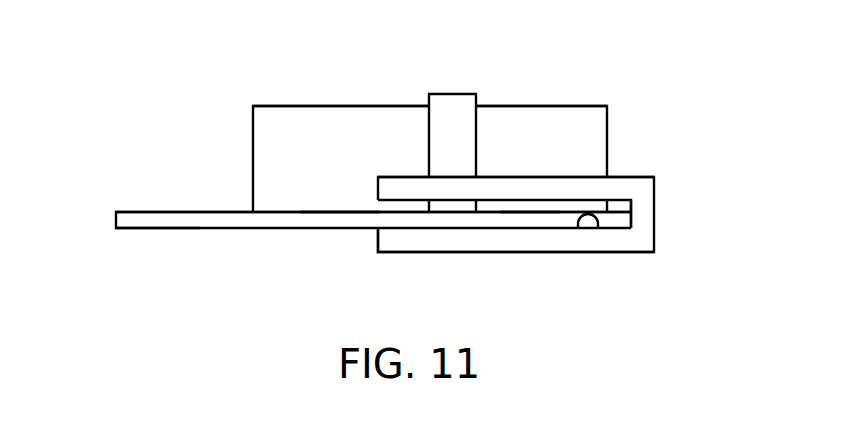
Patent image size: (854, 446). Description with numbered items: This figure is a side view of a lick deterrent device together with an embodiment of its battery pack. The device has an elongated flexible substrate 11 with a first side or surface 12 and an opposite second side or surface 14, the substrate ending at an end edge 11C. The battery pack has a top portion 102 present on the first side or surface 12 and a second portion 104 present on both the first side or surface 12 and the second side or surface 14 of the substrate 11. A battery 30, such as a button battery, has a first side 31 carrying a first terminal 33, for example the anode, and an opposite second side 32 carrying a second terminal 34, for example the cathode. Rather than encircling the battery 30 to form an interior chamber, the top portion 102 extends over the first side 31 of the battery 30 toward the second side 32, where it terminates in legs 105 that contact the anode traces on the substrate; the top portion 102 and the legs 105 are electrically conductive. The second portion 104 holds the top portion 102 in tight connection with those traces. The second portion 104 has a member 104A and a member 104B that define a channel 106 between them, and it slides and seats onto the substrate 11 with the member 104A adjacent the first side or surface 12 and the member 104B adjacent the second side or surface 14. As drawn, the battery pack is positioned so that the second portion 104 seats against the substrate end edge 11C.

The elongated flexible substrate 11 is at (181, 210).
The first side or surface 12 is at (138, 212).
The second side or surface 14 is at (158, 228).
The battery 30 is at (557, 106).
The first side of battery 31 is at (492, 106).
The first terminal 33 is at (383, 106).
The top portion 102 is at (452, 94).
The second portion 104 is at (627, 177).
The member 104A is at (562, 177).
The member 104B is at (608, 252).
The legs 105 is at (430, 204).
The channel 106 is at (578, 228).
The second side of battery 32 is at (523, 212).
The second terminal 34 is at (335, 212).
The end edge 11C is at (631, 215).